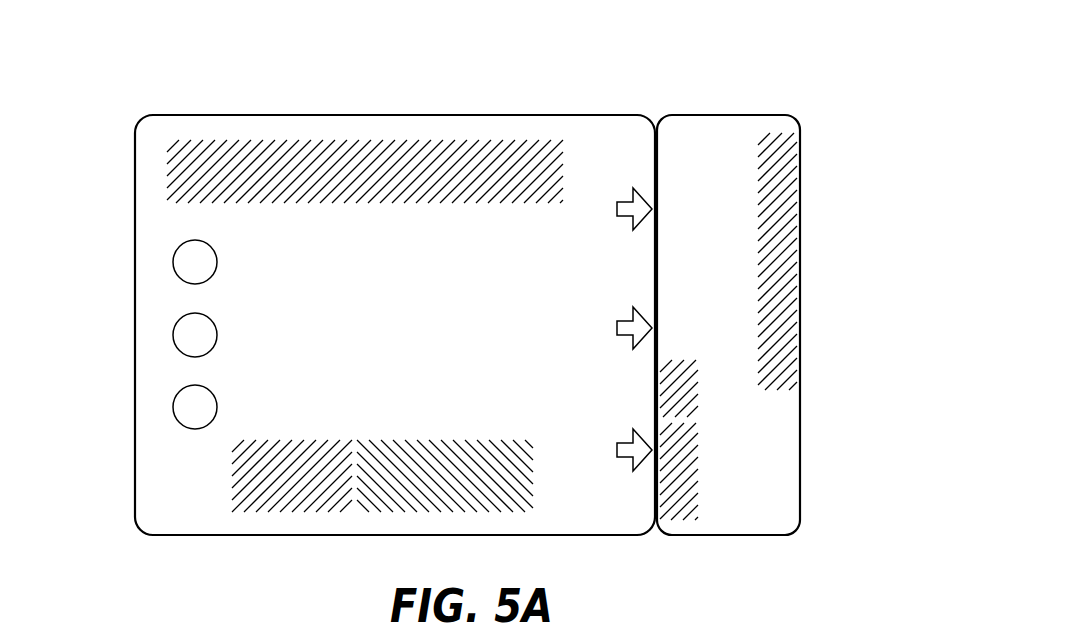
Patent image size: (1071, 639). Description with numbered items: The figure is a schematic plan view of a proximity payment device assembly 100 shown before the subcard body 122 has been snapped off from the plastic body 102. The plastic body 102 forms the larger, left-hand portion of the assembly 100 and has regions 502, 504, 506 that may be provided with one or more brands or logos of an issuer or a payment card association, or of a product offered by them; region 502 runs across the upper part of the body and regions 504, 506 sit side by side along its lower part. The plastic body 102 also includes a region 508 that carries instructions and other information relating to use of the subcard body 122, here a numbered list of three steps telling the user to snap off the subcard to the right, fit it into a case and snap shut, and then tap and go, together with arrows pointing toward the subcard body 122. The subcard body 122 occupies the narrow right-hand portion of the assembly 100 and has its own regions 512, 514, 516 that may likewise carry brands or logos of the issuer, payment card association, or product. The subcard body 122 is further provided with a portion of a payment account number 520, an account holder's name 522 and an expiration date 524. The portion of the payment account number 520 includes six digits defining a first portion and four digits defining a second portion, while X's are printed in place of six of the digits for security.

The proximity payment device assembly 100 is at (621, 52).
The plastic body 102 is at (397, 108).
The subcard body 122 is at (800, 442).
The region 502 is at (258, 160).
The region 504 is at (276, 483).
The region 506 is at (418, 483).
The region 508 is at (122, 235).
The region 512 is at (780, 215).
The region 514 is at (677, 392).
The region 516 is at (677, 497).
The portion of a payment account number 520 is at (735, 190).
The account holder's name 522 is at (708, 135).
The expiration date 524 is at (668, 252).